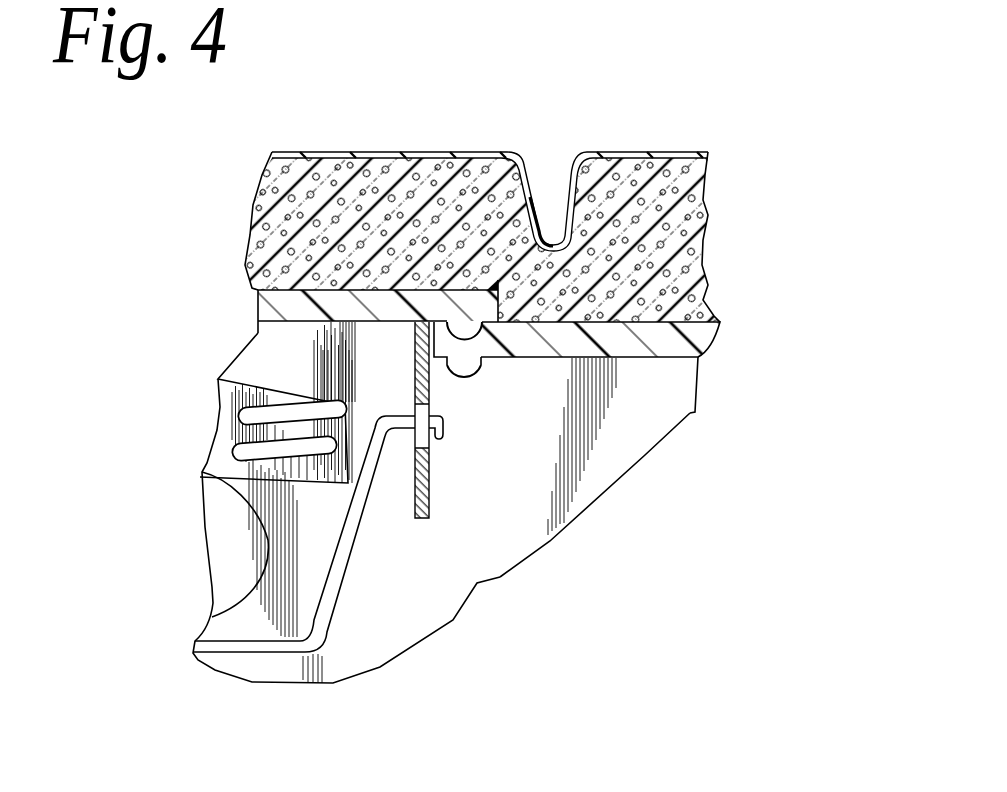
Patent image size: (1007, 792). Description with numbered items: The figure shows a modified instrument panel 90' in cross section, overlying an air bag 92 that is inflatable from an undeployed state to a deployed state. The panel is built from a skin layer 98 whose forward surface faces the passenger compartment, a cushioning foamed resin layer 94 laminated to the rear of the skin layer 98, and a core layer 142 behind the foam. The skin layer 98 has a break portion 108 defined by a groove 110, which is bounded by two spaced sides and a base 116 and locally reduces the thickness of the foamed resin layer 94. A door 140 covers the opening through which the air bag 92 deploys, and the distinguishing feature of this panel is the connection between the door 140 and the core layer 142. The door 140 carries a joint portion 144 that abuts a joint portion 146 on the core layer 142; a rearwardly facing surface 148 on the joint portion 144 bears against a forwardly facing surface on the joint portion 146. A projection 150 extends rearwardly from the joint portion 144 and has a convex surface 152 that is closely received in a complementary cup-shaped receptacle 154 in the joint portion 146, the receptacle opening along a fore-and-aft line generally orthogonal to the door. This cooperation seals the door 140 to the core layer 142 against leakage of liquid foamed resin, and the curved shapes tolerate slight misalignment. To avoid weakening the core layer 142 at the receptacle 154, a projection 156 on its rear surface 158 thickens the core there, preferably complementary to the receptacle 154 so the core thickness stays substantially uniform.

The skin layer 98 is at (303, 151).
The foamed resin layer 94 is at (675, 220).
The break portion 108 is at (549, 143).
The groove 110 is at (535, 180).
The instrument panel 90' is at (829, 229).
The door 140 is at (300, 321).
The core layer 142 is at (600, 352).
The joint portion 144 is at (455, 352).
The cup-shaped receptacle 154 is at (477, 352).
The convex surface 152 is at (483, 362).
The rearwardly facing surface 148 is at (437, 345).
The air bag 92 is at (230, 427).
The base 116 is at (633, 350).
The rear surface 158 is at (702, 398).
The projection 150 is at (470, 343).
The projection 156 is at (467, 379).
The joint portion 146 is at (457, 367).